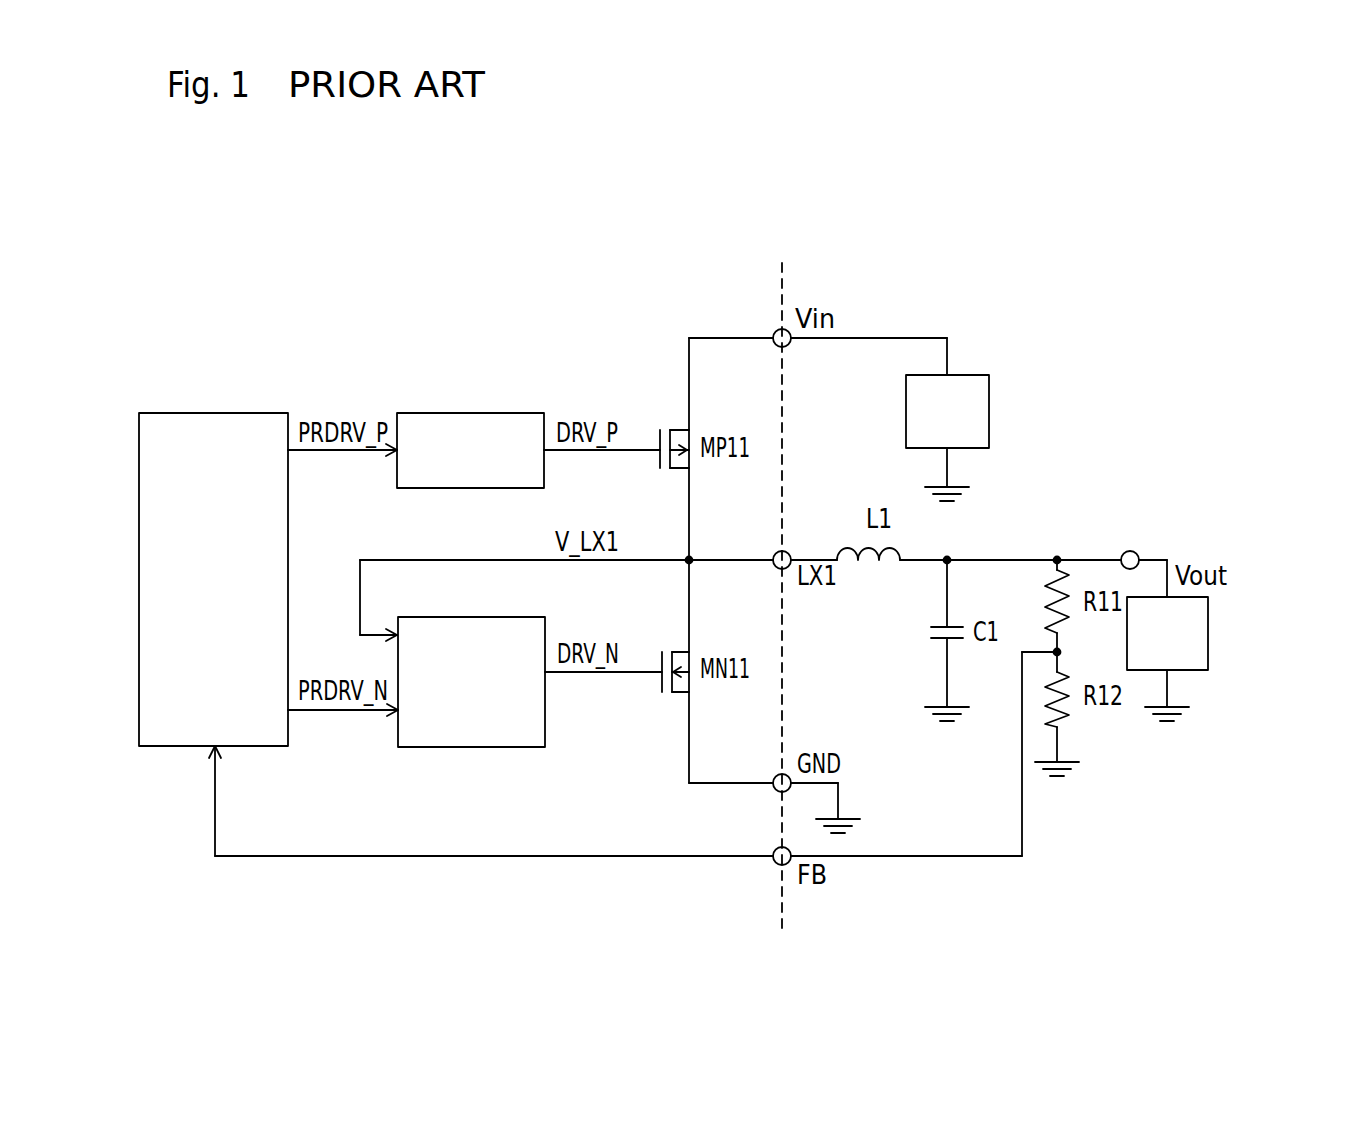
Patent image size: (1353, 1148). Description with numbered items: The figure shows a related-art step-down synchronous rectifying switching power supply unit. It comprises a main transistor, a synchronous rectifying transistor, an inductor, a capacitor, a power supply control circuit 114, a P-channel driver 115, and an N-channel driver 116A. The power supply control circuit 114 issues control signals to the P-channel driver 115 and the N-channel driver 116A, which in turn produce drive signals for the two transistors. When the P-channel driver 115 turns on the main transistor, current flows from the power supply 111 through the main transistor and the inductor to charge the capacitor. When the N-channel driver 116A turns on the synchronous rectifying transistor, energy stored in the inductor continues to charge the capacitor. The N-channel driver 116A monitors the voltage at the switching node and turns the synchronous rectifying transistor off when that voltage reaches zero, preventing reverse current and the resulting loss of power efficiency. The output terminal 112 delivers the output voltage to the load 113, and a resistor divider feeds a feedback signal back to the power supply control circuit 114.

The power supply 111 is at (989, 412).
The output terminal 112 is at (1131, 550).
The load 113 is at (1208, 630).
The power supply control circuit 114 is at (213, 412).
The P-channel driver 115 is at (470, 412).
The N-channel driver 116A is at (472, 747).